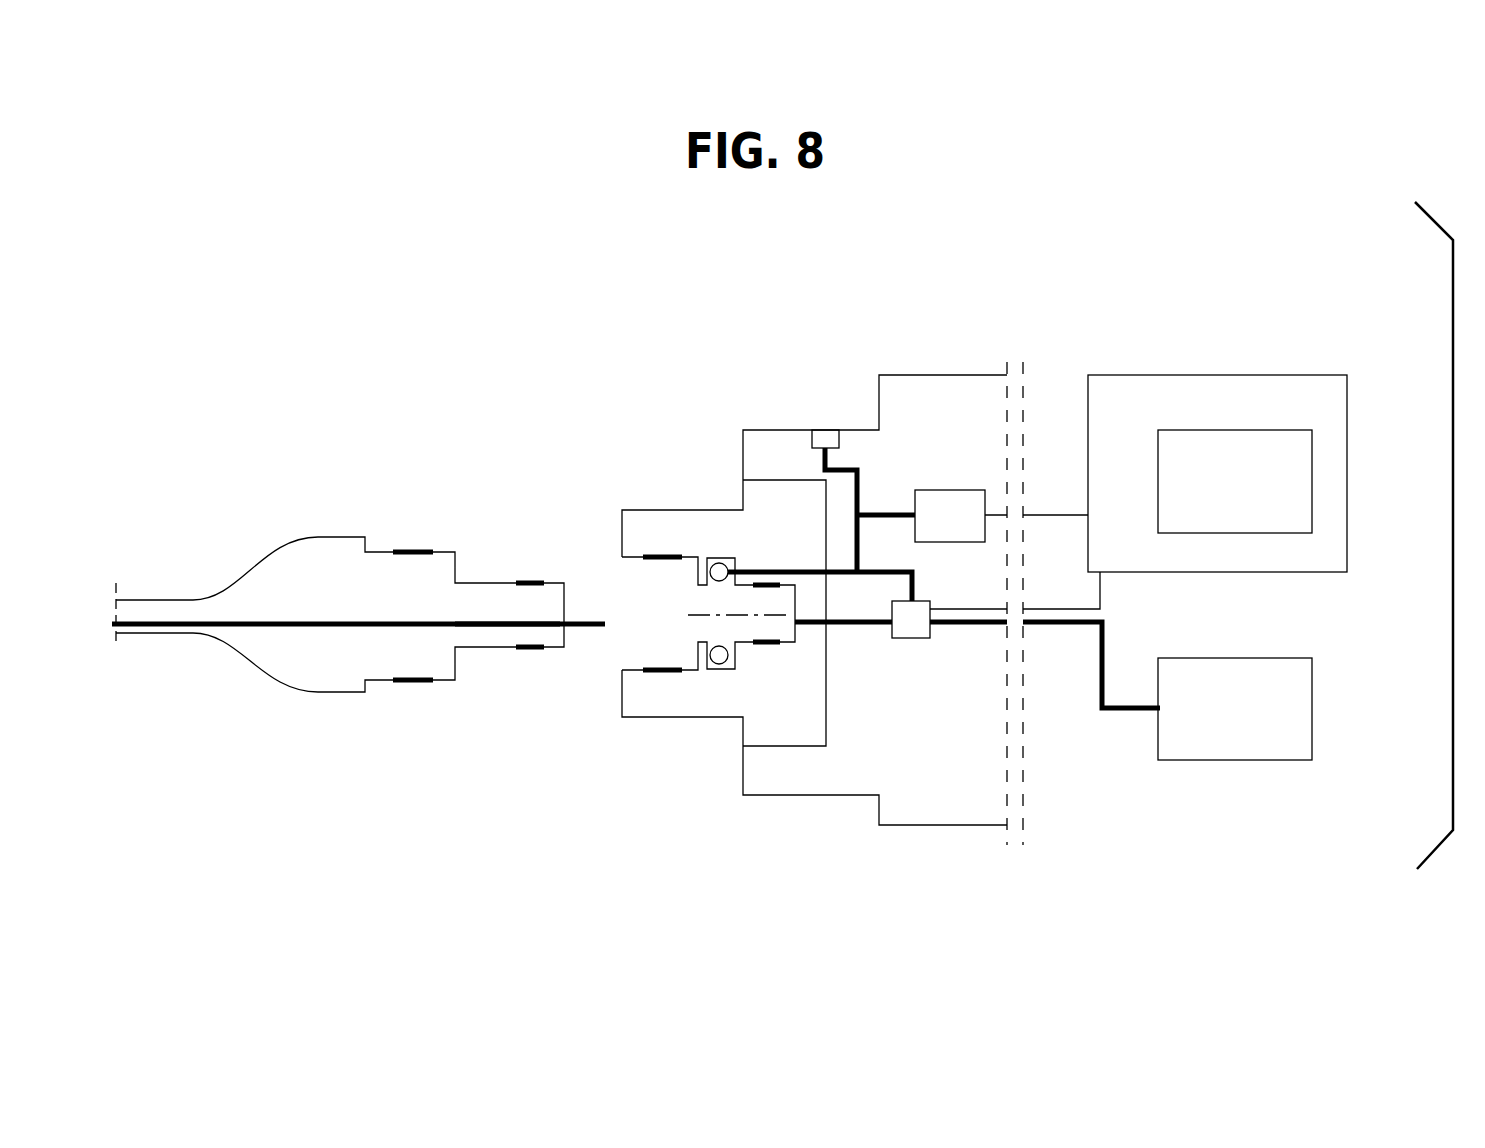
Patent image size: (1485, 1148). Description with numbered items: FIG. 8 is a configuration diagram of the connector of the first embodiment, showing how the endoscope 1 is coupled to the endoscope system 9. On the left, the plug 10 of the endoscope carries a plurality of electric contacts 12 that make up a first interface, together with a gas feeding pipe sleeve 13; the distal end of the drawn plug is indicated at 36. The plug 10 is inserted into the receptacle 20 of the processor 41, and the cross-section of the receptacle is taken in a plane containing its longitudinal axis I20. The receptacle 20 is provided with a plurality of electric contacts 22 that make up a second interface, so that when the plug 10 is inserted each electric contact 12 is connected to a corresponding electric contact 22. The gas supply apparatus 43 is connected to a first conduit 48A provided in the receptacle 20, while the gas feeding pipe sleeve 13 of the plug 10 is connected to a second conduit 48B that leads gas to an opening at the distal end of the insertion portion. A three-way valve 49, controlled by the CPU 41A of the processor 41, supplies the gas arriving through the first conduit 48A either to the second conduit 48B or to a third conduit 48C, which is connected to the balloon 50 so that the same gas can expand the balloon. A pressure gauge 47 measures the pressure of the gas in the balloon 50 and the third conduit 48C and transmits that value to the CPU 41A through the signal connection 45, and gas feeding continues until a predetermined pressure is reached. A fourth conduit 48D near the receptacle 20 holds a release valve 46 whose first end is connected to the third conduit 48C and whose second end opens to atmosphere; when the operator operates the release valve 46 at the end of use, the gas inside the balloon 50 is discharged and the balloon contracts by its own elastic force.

The endoscope 1 is at (423, 430).
The endoscope system 9 is at (1318, 318).
The plug 10 is at (303, 540).
The electric contacts 12 is at (410, 548).
The gas feeding pipe sleeve 13 is at (587, 628).
The receptacle 20 is at (678, 508).
The electric contacts 22 is at (657, 560).
The distal end 36 is at (160, 600).
The processor 41 is at (955, 375).
The CPU 41A is at (1272, 430).
The gas supply apparatus 43 is at (1268, 658).
The communication line 45 is at (1073, 607).
The release valve 46 is at (820, 428).
The pressure gauge 47 is at (947, 490).
The first conduit 48A is at (960, 623).
The second conduit 48B is at (487, 628).
The third conduit 48C is at (785, 568).
The fourth conduit 48D is at (858, 483).
The three-way valve 49 is at (910, 640).
The balloon 50 is at (720, 667).
The longitudinal axis I20 is at (716, 615).